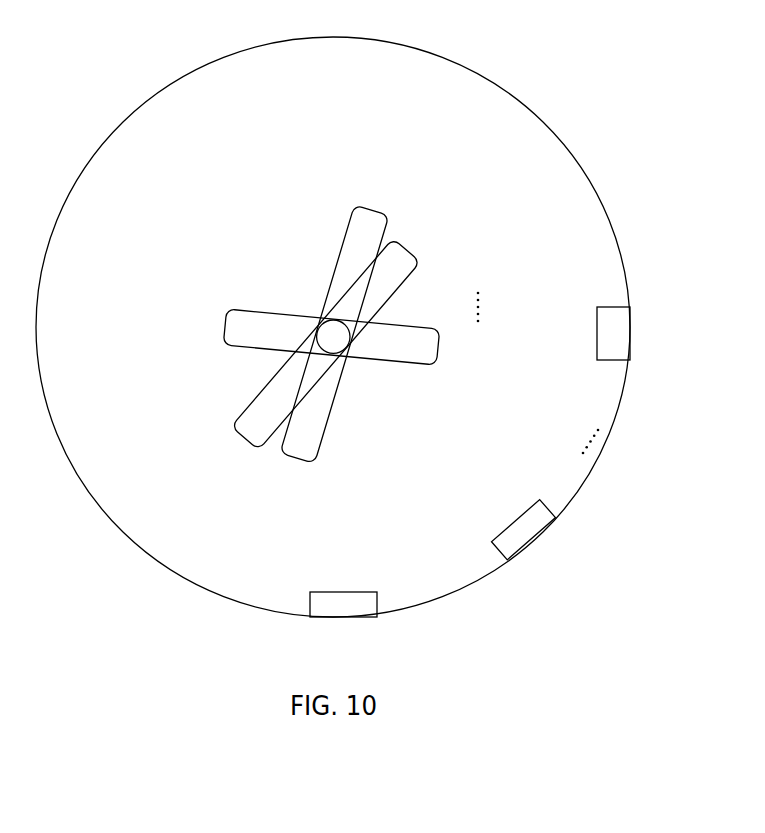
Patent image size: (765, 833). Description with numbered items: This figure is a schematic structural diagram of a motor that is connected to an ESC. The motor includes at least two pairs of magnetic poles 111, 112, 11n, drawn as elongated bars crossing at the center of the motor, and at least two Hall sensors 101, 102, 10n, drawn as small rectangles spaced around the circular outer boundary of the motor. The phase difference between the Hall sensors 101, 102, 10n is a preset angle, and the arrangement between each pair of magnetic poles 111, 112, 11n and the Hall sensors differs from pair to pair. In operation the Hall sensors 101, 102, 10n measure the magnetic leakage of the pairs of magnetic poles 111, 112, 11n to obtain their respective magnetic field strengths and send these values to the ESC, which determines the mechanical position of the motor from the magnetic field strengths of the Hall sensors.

The pair of magnetic poles 111 is at (347, 318).
The pair of magnetic poles 112 is at (359, 343).
The pair of magnetic poles 11n is at (360, 337).
The Hall sensor 101 is at (343, 582).
The Hall sensor 102 is at (516, 525).
The Hall sensor 10n is at (593, 333).